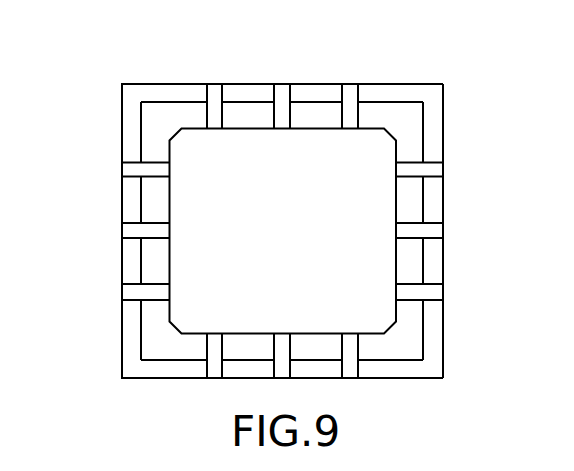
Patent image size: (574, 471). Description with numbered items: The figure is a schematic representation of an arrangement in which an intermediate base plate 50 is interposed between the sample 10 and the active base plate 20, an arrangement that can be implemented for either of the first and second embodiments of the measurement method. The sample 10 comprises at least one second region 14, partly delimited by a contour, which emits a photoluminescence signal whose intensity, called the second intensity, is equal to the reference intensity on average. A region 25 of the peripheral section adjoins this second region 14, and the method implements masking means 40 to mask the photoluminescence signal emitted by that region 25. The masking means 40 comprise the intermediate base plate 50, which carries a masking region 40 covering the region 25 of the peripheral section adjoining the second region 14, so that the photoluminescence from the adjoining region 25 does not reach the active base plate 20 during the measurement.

The sample 10 is at (178, 144).
The second region 14 is at (395, 168).
The active base plate 20 is at (152, 197).
The region of the peripheral section 25 is at (410, 168).
The masking means 40 is at (443, 163).
The intermediate base plate 50 is at (130, 262).